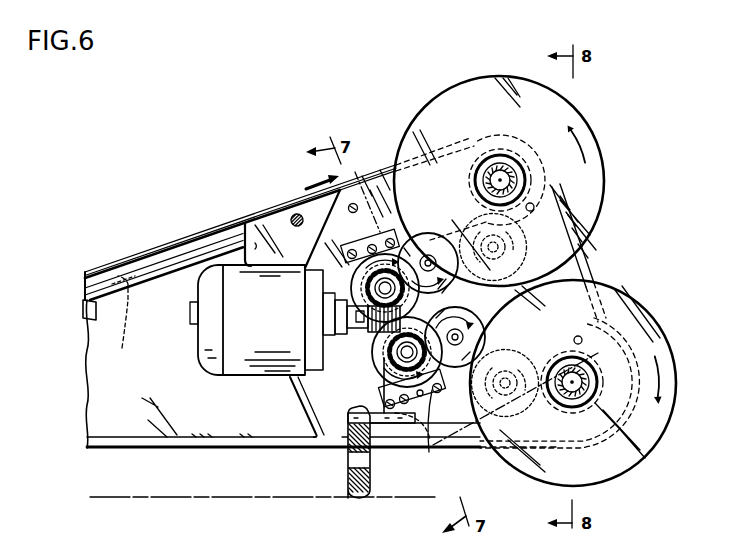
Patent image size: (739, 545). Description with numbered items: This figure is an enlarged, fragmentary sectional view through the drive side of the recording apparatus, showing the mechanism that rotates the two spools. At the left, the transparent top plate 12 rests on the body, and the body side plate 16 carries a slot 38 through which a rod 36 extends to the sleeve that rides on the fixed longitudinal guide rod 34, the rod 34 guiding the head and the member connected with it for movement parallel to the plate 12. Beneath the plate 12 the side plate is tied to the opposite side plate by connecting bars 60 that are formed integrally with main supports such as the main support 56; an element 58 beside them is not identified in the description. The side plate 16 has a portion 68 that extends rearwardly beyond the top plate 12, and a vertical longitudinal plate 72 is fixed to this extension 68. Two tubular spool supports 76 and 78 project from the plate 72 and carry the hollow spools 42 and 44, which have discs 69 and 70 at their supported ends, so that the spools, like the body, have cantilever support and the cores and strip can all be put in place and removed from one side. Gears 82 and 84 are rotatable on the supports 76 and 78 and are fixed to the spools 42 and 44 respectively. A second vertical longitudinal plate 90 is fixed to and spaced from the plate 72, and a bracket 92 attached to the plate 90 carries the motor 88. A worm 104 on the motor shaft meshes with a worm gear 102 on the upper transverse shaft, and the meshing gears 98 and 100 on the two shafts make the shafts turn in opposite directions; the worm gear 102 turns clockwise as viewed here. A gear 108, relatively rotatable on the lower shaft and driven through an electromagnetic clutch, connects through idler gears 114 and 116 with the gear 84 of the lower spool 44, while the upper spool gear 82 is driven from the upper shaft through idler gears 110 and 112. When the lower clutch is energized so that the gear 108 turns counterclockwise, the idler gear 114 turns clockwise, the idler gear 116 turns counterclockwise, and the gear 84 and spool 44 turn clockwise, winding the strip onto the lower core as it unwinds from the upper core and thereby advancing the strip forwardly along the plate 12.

The top plate 12 is at (130, 263).
The side plate 16 is at (140, 318).
The rod 34 is at (171, 273).
The rod 36 is at (91, 322).
The slot 38 is at (132, 320).
The spool 42 is at (512, 155).
The spool 44 is at (593, 366).
The main support 56 is at (348, 478).
The pin 58 is at (366, 457).
The connecting bar 60 is at (350, 442).
The portion of side plate 68 is at (350, 183).
The disc 69 is at (470, 85).
The disc 70 is at (632, 300).
The vertical longitudinal plate 72 is at (363, 172).
The spool support 76 is at (482, 180).
The spool support 78 is at (556, 365).
The gear 82 is at (462, 140).
The gear 84 is at (548, 338).
The motor 88 is at (247, 370).
The vertical longitudinal plate 90 is at (431, 452).
The bracket 92 is at (338, 316).
The gear 98 is at (330, 242).
The gear 100 is at (377, 370).
The worm gear 102 is at (370, 244).
The worm 104 is at (333, 353).
The gear 108 is at (383, 394).
The idler gear 110 is at (430, 229).
The idler gear 112 is at (462, 227).
The idler gear 114 is at (463, 380).
The idler gear 116 is at (513, 410).